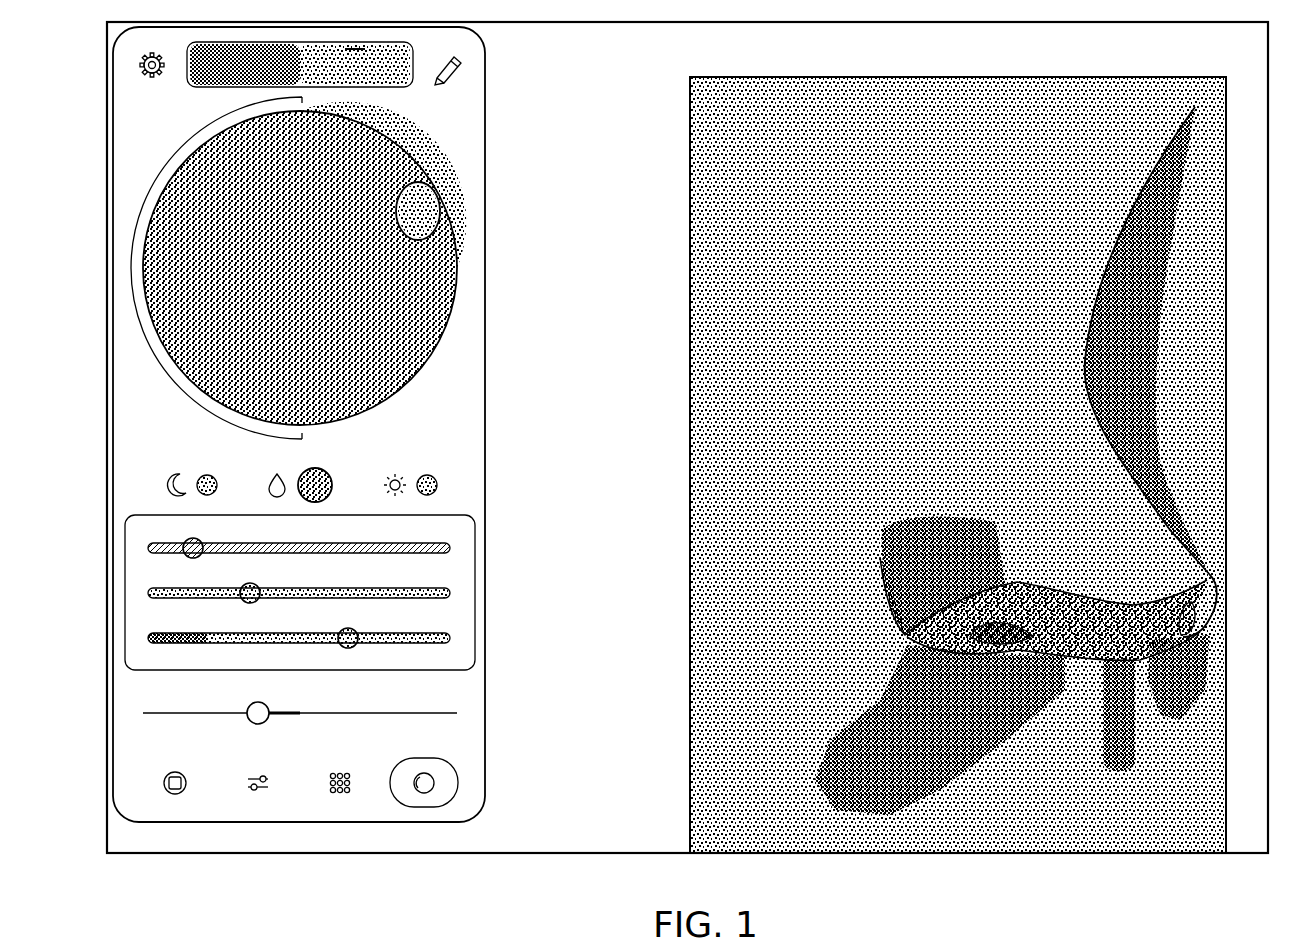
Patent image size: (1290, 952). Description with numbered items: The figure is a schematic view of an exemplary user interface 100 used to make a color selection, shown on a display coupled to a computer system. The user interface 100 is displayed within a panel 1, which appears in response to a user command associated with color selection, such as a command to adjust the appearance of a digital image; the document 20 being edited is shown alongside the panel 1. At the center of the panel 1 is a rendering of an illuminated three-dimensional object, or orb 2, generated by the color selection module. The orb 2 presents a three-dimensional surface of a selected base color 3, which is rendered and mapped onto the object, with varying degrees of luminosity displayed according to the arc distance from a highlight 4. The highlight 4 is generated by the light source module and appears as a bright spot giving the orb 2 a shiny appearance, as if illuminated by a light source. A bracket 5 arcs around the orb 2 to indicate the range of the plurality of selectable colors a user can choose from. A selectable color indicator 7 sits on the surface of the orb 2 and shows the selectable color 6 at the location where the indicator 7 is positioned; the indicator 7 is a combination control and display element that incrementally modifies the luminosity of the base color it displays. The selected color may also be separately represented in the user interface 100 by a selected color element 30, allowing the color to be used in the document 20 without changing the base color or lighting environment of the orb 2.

The panel 1 is at (468, 102).
The illuminated three-dimensional object 2 is at (348, 252).
The selected base color 3 is at (317, 283).
The highlight 4 is at (357, 163).
The bracket 5 is at (145, 338).
The selectable color 6 is at (492, 223).
The selectable color indicator 7 is at (427, 208).
The document 20 is at (727, 580).
The selected color element 30 is at (333, 483).
The user interface 100 is at (467, 742).